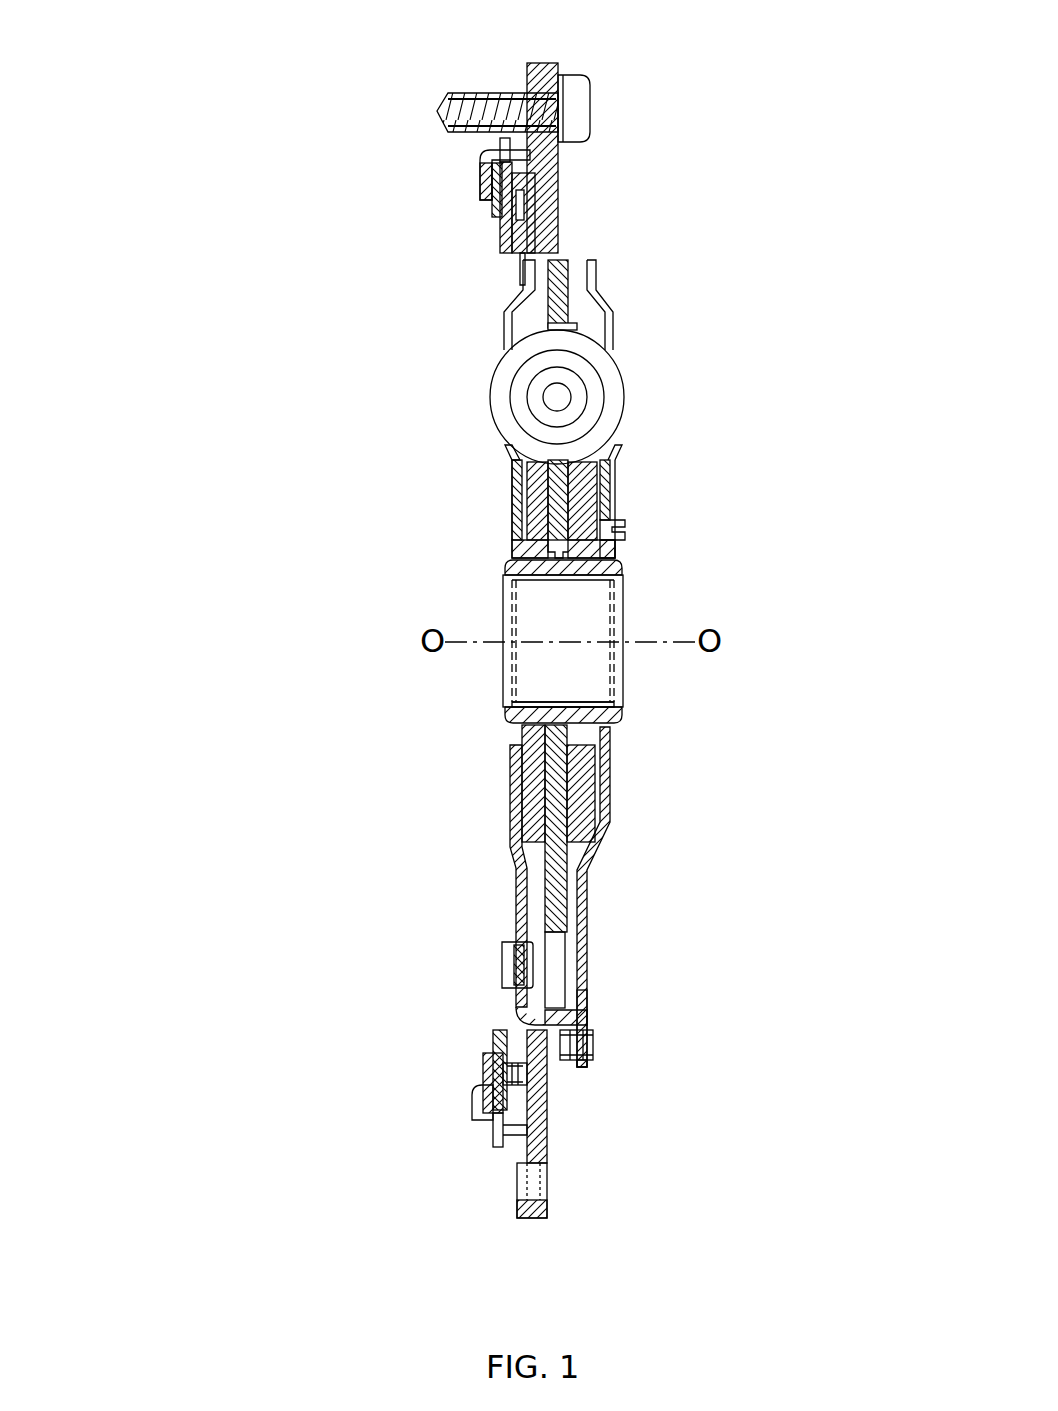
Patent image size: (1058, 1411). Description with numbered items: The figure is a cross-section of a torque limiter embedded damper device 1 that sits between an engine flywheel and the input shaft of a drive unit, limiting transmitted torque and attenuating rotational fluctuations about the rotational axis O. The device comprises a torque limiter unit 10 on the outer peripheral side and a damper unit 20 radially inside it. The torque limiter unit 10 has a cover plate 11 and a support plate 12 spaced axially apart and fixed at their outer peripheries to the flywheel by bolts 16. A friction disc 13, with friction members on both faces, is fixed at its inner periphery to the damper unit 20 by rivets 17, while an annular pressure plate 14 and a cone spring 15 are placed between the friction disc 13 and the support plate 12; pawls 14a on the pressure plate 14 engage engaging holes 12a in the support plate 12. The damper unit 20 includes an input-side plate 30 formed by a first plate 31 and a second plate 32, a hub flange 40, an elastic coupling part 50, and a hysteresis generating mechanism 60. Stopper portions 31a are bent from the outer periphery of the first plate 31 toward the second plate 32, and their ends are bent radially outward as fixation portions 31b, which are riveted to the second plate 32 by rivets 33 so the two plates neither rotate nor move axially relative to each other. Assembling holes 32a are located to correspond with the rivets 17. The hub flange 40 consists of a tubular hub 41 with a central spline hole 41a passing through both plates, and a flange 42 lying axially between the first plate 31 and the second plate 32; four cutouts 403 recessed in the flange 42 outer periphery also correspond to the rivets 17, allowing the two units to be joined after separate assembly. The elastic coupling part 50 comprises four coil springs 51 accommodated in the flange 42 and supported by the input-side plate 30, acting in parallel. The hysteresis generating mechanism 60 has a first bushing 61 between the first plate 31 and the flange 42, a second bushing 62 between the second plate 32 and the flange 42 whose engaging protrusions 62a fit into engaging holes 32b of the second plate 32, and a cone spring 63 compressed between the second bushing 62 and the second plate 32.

The torque limiter embedded damper device 1 is at (283, 157).
The torque limiter unit 10 is at (378, 201).
The cover plate 11 is at (555, 185).
The support plate 12 is at (485, 162).
The engaging holes 12a is at (488, 1133).
The friction disc 13 is at (537, 183).
The pressure plate 14 is at (505, 248).
The pawls 14a is at (498, 1148).
The cone spring 15 is at (497, 217).
The bolts 16 is at (568, 80).
The rivets 17 is at (510, 958).
The damper unit 20 is at (375, 393).
The input-side plate 30 is at (615, 262).
The first plate 31 is at (515, 765).
The stopper portions 31a is at (523, 1025).
The fixation portions 31b is at (578, 1070).
The second plate 32 is at (608, 770).
The assembling holes 32a is at (585, 1000).
The engaging holes 32b is at (627, 528).
The rivets 33 is at (590, 1045).
The hub flange 40 is at (488, 672).
The hub 41 is at (515, 566).
The spline hole 41a is at (582, 700).
The flange 42 is at (555, 852).
The cutouts 403 is at (555, 935).
The elastic coupling part 50 is at (627, 360).
The coil springs 51 is at (610, 395).
The hysteresis generating mechanism 60 is at (512, 512).
The first bushing 61 is at (537, 490).
The second bushing 62 is at (612, 467).
The engaging protrusions 62a is at (627, 545).
The cone spring 63 is at (600, 487).